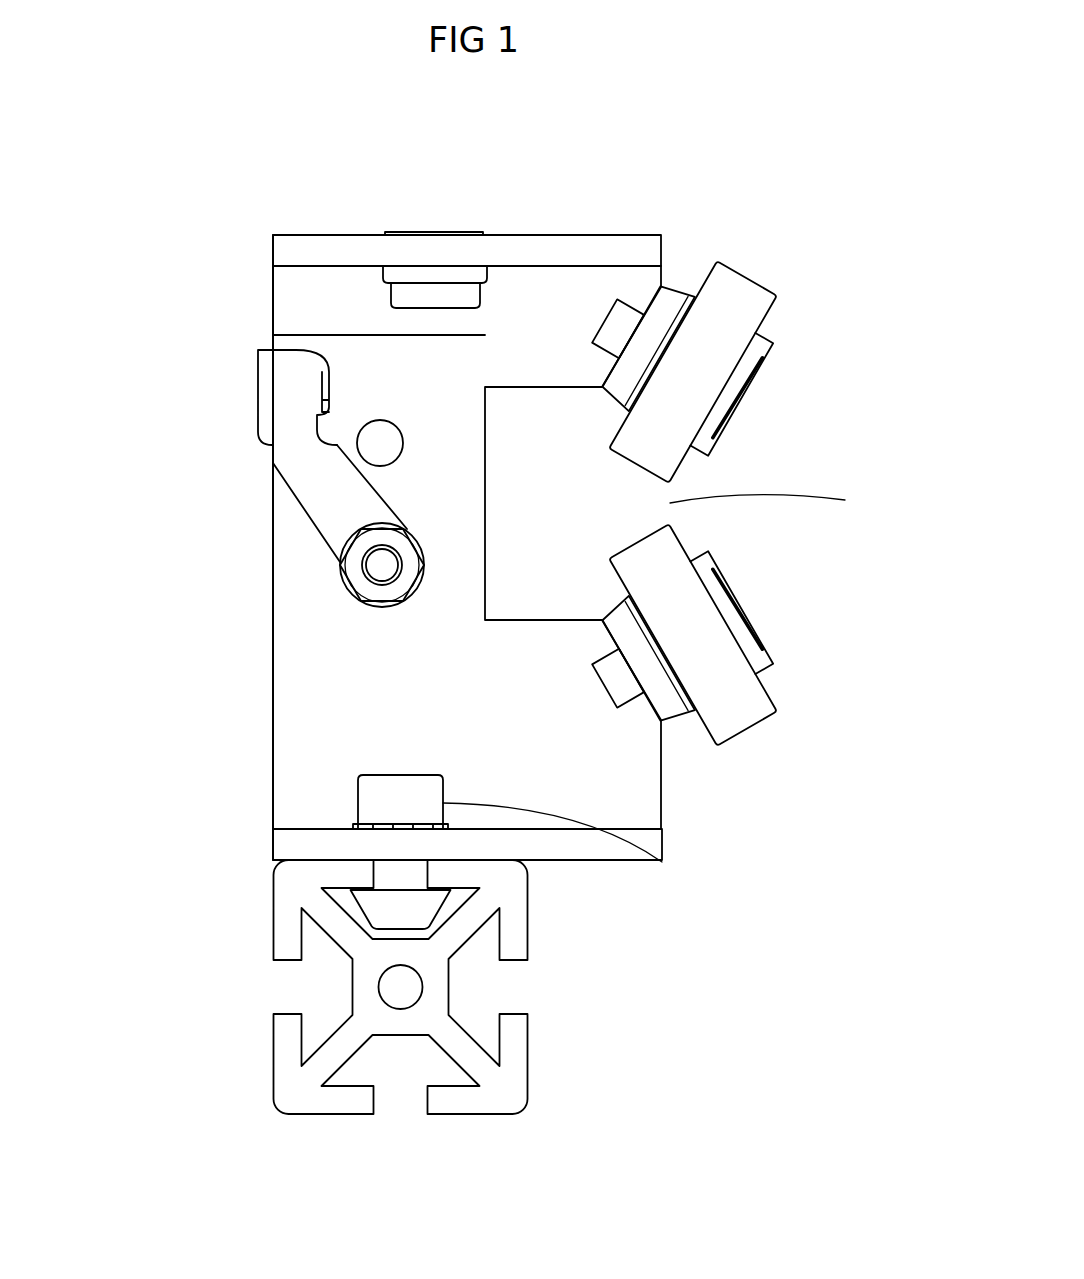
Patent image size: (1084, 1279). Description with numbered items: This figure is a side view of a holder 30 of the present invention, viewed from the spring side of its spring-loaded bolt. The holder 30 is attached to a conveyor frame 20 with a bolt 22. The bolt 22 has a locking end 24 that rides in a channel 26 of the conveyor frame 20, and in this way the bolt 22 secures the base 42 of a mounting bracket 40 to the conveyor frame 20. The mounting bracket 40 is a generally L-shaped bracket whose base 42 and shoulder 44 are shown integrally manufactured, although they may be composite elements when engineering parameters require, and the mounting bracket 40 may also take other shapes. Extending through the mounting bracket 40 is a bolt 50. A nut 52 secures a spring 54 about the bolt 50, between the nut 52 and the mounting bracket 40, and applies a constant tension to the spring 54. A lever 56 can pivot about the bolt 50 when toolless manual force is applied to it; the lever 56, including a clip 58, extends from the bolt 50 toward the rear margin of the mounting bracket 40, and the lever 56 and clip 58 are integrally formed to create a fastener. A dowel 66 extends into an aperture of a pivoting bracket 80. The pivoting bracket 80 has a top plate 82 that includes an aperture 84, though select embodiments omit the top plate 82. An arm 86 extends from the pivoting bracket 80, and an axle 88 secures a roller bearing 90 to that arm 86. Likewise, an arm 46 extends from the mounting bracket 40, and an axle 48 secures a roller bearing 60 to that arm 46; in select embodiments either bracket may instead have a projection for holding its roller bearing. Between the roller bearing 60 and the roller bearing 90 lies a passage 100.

The conveyor frame 20 is at (272, 1048).
The bolt 22 is at (632, 703).
The locking end 24 is at (443, 900).
The channel 26 is at (428, 930).
The holder 30 is at (260, 225).
The mounting bracket 40 is at (272, 755).
The base 42 is at (272, 845).
The shoulder 44 is at (325, 667).
The arm 46 is at (675, 717).
The axle 48 is at (682, 713).
The bolt 50 is at (380, 563).
The nut 52 is at (350, 562).
The spring 54 is at (340, 543).
The lever 56 is at (310, 483).
The clip 58 is at (277, 400).
The roller bearing 60 is at (752, 735).
The dowel 66 is at (380, 443).
The pivoting bracket 80 is at (272, 280).
The top plate 82 is at (318, 247).
The aperture 84 is at (443, 233).
The arm 86 is at (675, 293).
The axle 88 is at (632, 313).
The roller bearing 90 is at (750, 277).
The passage 100 is at (786, 505).